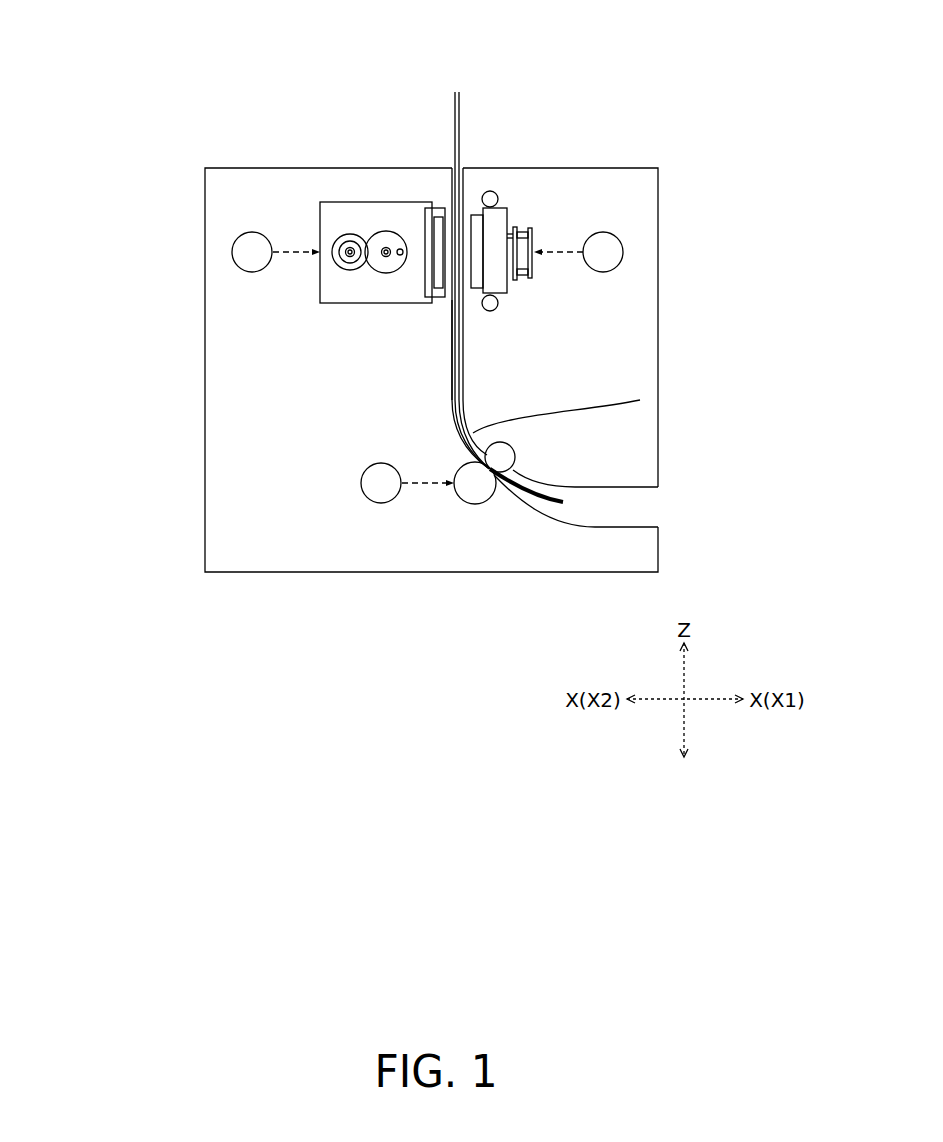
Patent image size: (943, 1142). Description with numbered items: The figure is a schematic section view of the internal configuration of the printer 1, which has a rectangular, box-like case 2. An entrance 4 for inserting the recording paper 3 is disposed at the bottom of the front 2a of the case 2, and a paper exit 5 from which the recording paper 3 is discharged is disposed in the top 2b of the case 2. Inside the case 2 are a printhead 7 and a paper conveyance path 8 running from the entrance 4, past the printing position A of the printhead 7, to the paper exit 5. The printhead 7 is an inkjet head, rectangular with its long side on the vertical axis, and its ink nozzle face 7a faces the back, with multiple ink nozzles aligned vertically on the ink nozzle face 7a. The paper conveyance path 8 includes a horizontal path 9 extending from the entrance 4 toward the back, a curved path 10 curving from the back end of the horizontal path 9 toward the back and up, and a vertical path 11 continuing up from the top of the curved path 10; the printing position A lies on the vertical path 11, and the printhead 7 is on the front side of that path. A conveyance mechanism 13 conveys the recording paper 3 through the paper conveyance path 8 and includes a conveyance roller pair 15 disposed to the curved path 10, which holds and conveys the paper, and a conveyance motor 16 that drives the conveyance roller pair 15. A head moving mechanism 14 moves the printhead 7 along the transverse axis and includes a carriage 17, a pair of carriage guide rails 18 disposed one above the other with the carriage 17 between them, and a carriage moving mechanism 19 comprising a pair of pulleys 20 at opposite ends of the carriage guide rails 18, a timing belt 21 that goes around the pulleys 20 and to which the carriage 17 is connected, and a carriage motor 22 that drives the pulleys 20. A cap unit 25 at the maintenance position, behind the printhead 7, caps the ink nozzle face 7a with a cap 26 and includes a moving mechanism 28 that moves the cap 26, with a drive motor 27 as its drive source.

The printer 1 is at (172, 98).
The case 2 is at (272, 167).
The front 2a is at (660, 443).
The top 2b is at (613, 168).
The recording paper 3 is at (458, 122).
The entrance 4 is at (658, 507).
The paper exit 5 is at (454, 160).
The printhead 7 is at (490, 207).
The ink nozzle face 7a is at (479, 213).
The paper conveyance path 8 is at (443, 363).
The horizontal path 9 is at (613, 528).
The curved path 10 is at (640, 400).
The vertical path 11 is at (467, 322).
The conveyance mechanism 13 is at (461, 527).
The head moving mechanism 14 is at (519, 179).
The conveyance roller pair 15 is at (515, 468).
The conveyance motor 16 is at (382, 504).
The carriage 17 is at (503, 206).
The carriage guide rails 18 is at (494, 192).
The carriage moving mechanism 19 is at (724, 183).
The pulleys 20 is at (533, 240).
The timing belt 21 is at (520, 228).
The carriage motor 22 is at (623, 252).
The cap unit 25 is at (337, 192).
The cap 26 is at (403, 249).
The drive motor 27 is at (232, 252).
The moving mechanism 28 is at (343, 219).
The printing position A is at (446, 253).